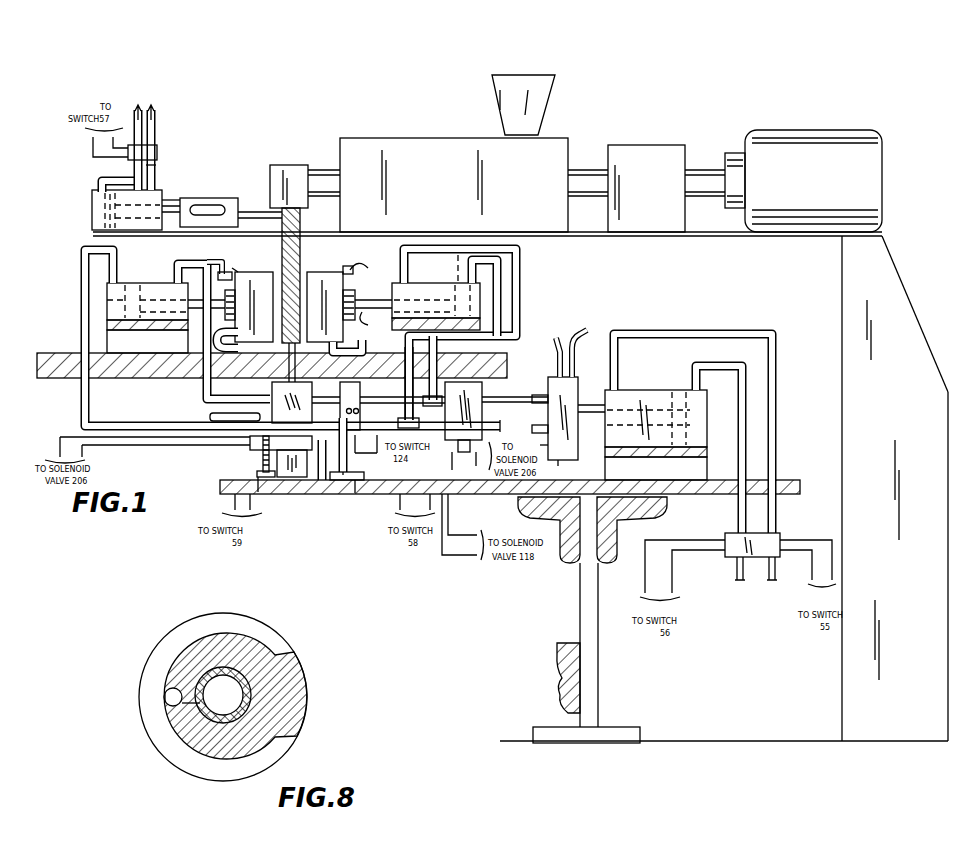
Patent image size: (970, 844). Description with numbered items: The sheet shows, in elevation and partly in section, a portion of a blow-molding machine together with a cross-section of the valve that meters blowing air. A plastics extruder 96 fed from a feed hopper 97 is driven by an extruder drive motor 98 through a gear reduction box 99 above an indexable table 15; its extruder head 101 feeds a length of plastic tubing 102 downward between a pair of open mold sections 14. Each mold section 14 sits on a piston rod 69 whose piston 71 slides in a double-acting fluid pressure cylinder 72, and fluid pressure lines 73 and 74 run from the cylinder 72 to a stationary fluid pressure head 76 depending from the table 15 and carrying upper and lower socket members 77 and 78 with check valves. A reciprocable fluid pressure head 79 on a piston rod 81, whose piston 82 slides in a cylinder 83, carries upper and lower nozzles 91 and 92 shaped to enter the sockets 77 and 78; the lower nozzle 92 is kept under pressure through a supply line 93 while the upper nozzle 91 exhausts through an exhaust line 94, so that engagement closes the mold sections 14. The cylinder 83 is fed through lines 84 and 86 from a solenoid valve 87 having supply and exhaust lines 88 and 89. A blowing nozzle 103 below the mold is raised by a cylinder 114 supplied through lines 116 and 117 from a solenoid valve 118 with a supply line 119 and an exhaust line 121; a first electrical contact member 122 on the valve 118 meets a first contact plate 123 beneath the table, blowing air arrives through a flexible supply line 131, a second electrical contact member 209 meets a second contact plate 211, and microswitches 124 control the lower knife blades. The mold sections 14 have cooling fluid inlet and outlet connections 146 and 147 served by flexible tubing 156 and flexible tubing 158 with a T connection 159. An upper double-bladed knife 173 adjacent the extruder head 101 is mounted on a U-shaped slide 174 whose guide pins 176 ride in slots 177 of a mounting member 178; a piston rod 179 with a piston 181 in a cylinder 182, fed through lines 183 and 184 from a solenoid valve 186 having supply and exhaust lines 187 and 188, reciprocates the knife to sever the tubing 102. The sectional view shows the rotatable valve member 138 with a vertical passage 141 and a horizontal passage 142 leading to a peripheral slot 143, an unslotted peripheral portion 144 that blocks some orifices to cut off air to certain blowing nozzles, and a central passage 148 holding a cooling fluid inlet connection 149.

In FIG. 1, the mold section 14 is at (262, 272).
In FIG. 1, the indexable table 15 is at (46, 353).
In FIG. 1, the piston rod 69 is at (371, 322).
In FIG. 1, the piston 71 is at (107, 300).
In FIG. 1, the double-acting fluid pressure cylinder 72 is at (145, 290).
In FIG. 1, the fluid pressure line 73 is at (178, 268).
In FIG. 1, the fluid pressure line 74 is at (80, 255).
In FIG. 1, the stationary fluid pressure head 76 is at (492, 403).
In FIG. 1, the upper socket member 77 is at (490, 376).
In FIG. 1, the lower socket member 78 is at (492, 425).
In FIG. 1, the reciprocable fluid pressure head 79 is at (568, 460).
In FIG. 1, the piston rod 81 is at (591, 405).
In FIG. 1, the piston 82 is at (681, 395).
In FIG. 1, the double-acting fluid pressure cylinder 83 is at (625, 395).
In FIG. 1, the fluid pressure line 84 is at (730, 313).
In FIG. 1, the fluid pressure line 86 is at (698, 366).
In FIG. 1, the solenoid valve 87 is at (780, 535).
In FIG. 1, the fluid pressure supply line 88 is at (771, 580).
In FIG. 1, the exhaust line 89 is at (735, 580).
In FIG. 1, the upper fluid pressure nozzle 91 is at (535, 398).
In FIG. 1, the lower fluid pressure nozzle 92 is at (546, 448).
In FIG. 1, the fluid pressure supply line 93 is at (588, 334).
In FIG. 1, the exhaust line 94 is at (562, 340).
In FIG. 1, the plastics extruder 96 is at (432, 118).
In FIG. 1, the feed hopper 97 is at (540, 92).
In FIG. 1, the extruder drive motor 98 is at (828, 140).
In FIG. 1, the gear reduction box 99 is at (645, 150).
In FIG. 1, the extruder head 101 is at (298, 175).
In FIG. 1, the tubing of plastic material 102 is at (300, 250).
In FIG. 1, the blowing nozzle 103 is at (308, 369).
In FIG. 1, the double-acting fluid pressure cylinder 114 is at (262, 462).
In FIG. 1, the fluid pressure line 116 is at (316, 482).
In FIG. 1, the fluid pressure line 117 is at (272, 385).
In FIG. 1, the solenoid valve 118 is at (374, 368).
In FIG. 1, the fluid pressure supply line 119 is at (361, 392).
In FIG. 1, the exhaust line 121 is at (362, 413).
In FIG. 1, the first electrical contact member 122 is at (347, 482).
In FIG. 1, the first contact plate 123 is at (358, 493).
In FIG. 1, the microswitch 124 is at (450, 444).
In FIG. 1, the flexible supply line 131 is at (214, 416).
In FIG. 1, the cooling fluid inlet connection 146 is at (222, 270).
In FIG. 1, the cooling fluid outlet connection 147 is at (216, 340).
In FIG. 1, the flexible tubing 156 is at (210, 262).
In FIG. 1, the flexible tubing 158 is at (240, 358).
In FIG. 1, the T connection 159 is at (371, 272).
In FIG. 1, the upper double-bladed knife 173 is at (262, 272).
In FIG. 1, the U-shaped slide 174 is at (262, 212).
In FIG. 1, the guide pins 176 is at (195, 208).
In FIG. 1, the slots 177 is at (222, 207).
In FIG. 1, the mounting member 178 is at (170, 202).
In FIG. 1, the piston rod 179 is at (176, 203).
In FIG. 1, the piston 181 is at (110, 218).
In FIG. 1, the double-acting fluid pressure cylinder 182 is at (92, 208).
In FIG. 1, the fluid pressure line 183 is at (153, 175).
In FIG. 1, the fluid pressure line 184 is at (93, 157).
In FIG. 1, the solenoid valve 186 is at (152, 150).
In FIG. 1, the fluid pressure supply line 187 is at (138, 124).
In FIG. 1, the exhaust line 188 is at (152, 124).
In FIG. 1, the second electrical contact member 209 is at (281, 456).
In FIG. 1, the second contact plate 211 is at (260, 490).
In FIG. 8, the valve member 138 is at (310, 652).
In FIG. 8, the vertical passage 141 is at (168, 690).
In FIG. 8, the horizontal passage 142 is at (164, 700).
In FIG. 8, the peripheral slot 143 is at (210, 773).
In FIG. 8, the unslotted peripheral portion 144 is at (300, 707).
In FIG. 8, the centrally extending passage 148 is at (251, 695).
In FIG. 8, the cooling fluid inlet connection 149 is at (205, 706).